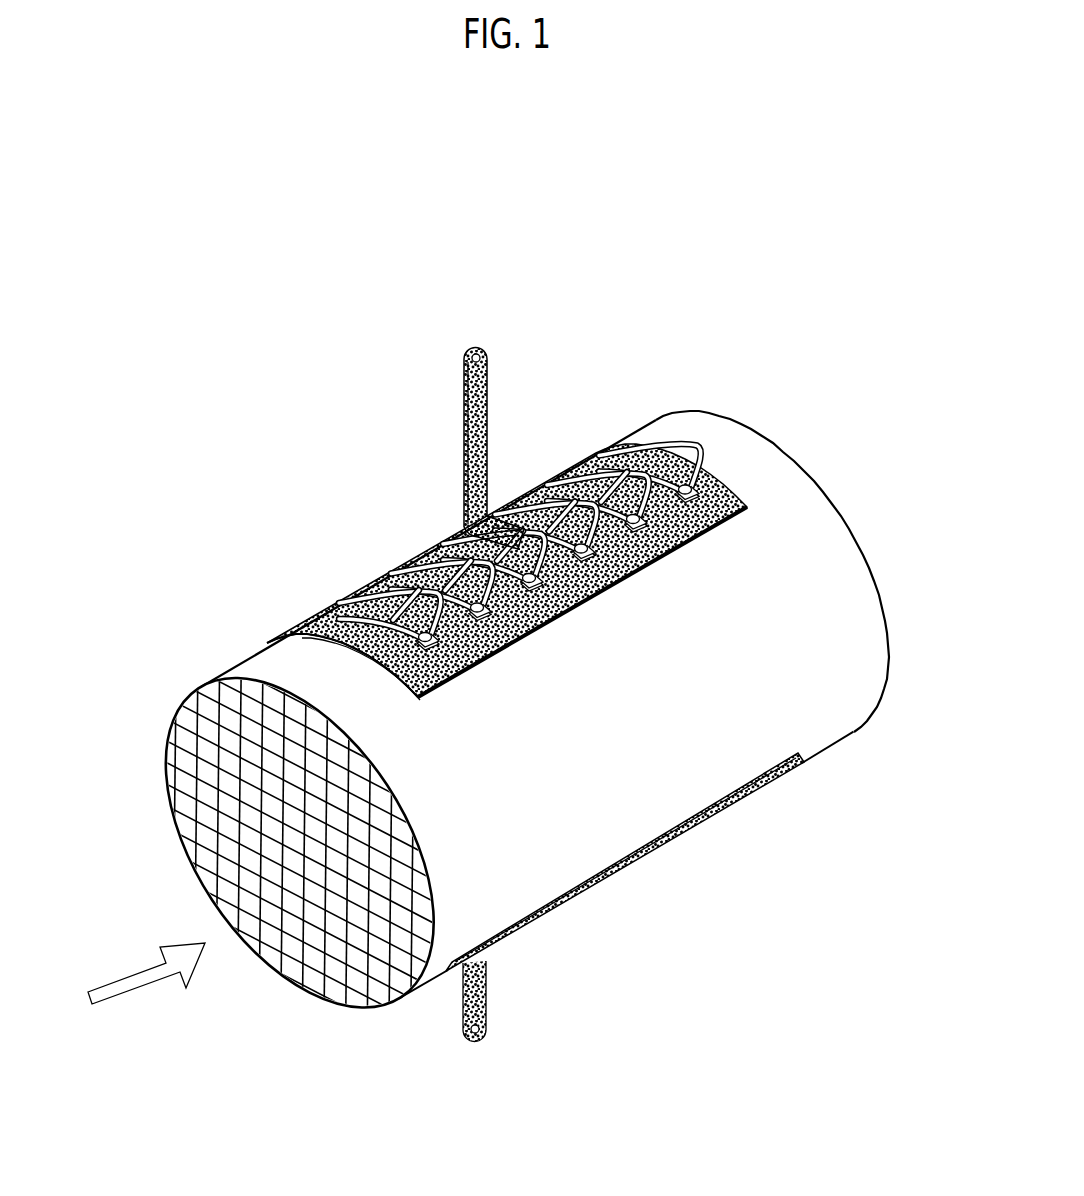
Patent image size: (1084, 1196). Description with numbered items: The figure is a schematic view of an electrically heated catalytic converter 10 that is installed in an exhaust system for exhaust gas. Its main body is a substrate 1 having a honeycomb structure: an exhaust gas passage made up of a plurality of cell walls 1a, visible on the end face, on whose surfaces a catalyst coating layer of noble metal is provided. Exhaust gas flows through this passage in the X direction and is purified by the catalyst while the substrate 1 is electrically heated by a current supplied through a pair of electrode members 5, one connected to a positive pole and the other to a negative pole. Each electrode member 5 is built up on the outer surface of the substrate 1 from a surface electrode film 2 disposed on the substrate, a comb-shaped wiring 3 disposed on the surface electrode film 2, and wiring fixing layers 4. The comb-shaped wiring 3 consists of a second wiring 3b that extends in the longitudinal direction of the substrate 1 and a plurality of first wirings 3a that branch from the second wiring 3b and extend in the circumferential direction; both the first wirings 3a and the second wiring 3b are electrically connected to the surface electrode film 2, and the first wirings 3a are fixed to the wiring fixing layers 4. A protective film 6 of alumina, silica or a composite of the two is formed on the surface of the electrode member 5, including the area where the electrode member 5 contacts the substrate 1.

The electrically heated catalytic converter 10 is at (762, 330).
The substrate 1 is at (838, 557).
The cell walls 1a is at (323, 942).
The surface electrode film 2 is at (615, 560).
The comb-shaped wiring 3 is at (415, 477).
The first wirings 3a is at (457, 597).
The second wiring 3b is at (470, 542).
The wiring fixing layers 4 is at (426, 638).
The electrode members 5 is at (542, 359).
The protective film 6 is at (683, 491).